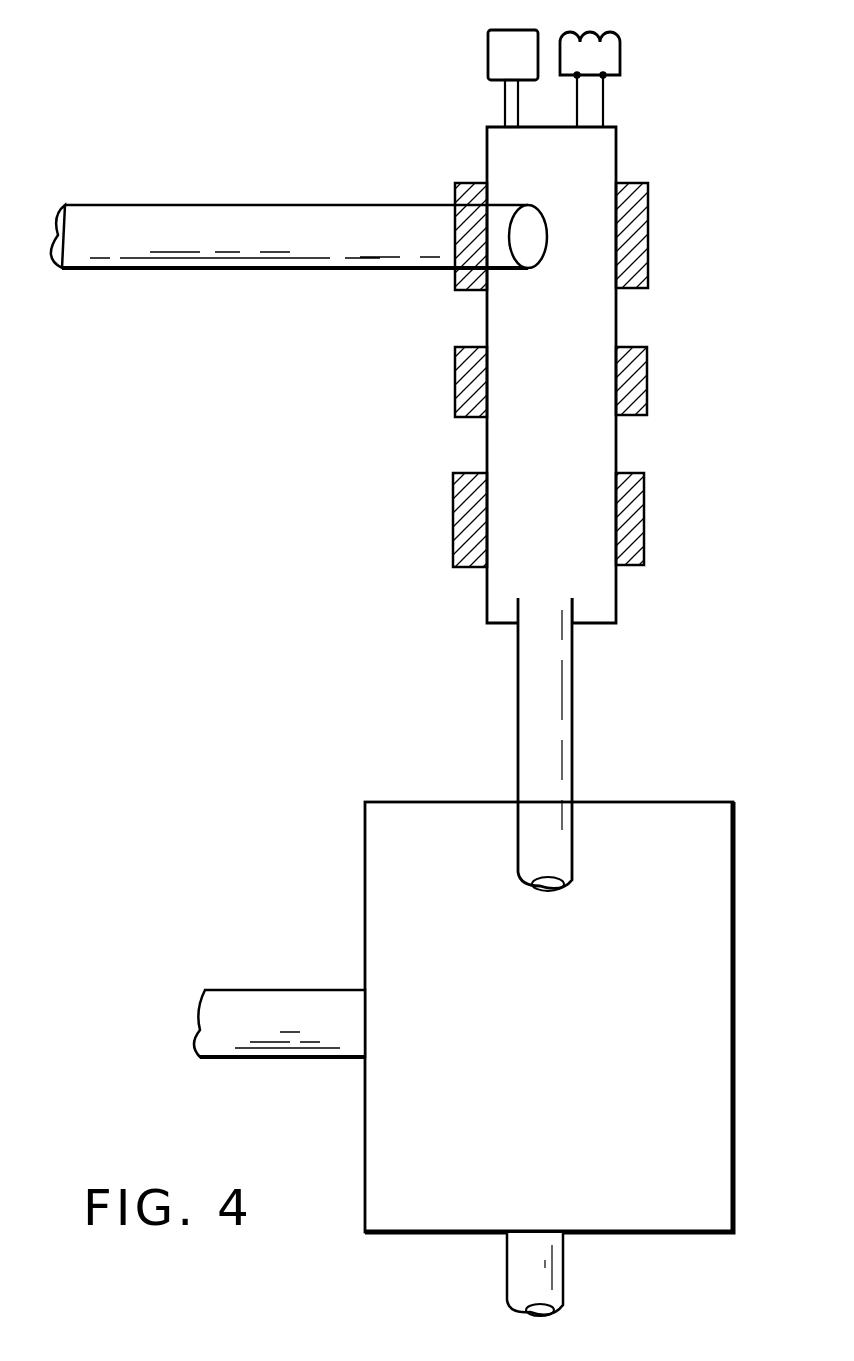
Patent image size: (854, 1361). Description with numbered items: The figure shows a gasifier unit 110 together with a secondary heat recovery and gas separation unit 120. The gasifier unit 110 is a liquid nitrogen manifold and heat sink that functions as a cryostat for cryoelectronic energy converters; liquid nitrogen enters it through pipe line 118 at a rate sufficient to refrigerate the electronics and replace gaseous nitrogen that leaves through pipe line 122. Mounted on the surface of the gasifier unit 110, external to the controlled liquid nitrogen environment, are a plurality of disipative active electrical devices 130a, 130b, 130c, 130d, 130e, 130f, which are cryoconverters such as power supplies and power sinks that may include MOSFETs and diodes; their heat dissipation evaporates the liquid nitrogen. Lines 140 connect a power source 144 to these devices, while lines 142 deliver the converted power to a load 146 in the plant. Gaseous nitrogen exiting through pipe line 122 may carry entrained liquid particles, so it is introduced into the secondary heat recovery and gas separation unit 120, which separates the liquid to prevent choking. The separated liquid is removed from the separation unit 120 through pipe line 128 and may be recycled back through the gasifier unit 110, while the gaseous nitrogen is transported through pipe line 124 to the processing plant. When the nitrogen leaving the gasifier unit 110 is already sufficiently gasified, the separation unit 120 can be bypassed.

The gasifier unit 110 is at (688, 138).
The pipe line 118 is at (208, 205).
The secondary heat recovery and gas separation unit 120 is at (560, 1013).
The pipe line 122 is at (572, 700).
The pipe line 124 is at (268, 990).
The pipe line 128 is at (563, 1280).
The disipative active electrical device 130a is at (455, 183).
The disipative active electrical device 130b is at (648, 208).
The disipative active electrical device 130c is at (455, 382).
The disipative active electrical device 130d is at (647, 383).
The disipative active electrical device 130e is at (455, 508).
The disipative active electrical device 130f is at (645, 513).
The lines 140 is at (505, 100).
The lines 142 is at (605, 100).
The power source 144 is at (487, 59).
The load 146 is at (622, 50).